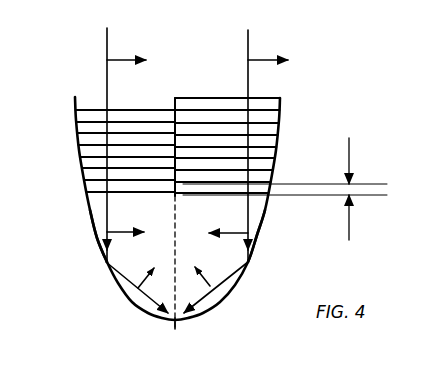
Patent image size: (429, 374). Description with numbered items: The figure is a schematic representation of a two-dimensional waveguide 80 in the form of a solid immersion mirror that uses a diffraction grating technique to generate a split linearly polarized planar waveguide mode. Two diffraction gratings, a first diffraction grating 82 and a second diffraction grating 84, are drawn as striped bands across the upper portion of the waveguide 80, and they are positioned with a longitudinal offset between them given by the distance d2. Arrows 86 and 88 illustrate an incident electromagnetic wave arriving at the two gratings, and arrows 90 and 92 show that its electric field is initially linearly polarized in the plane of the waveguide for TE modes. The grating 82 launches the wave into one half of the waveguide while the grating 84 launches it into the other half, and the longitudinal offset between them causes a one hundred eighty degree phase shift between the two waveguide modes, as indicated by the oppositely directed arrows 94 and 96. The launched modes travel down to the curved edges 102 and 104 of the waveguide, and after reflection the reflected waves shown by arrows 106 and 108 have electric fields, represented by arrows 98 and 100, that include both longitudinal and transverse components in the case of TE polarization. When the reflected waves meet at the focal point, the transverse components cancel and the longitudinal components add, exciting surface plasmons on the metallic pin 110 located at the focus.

The two-dimensional waveguide 80 is at (88, 100).
The first diffraction grating 82 is at (85, 152).
The second diffraction grating 84 is at (280, 135).
The incident electromagnetic wave arrow 86 is at (105, 43).
The incident electromagnetic wave arrow 88 is at (248, 40).
The incident electric field arrow 90 is at (118, 56).
The incident electric field arrow 92 is at (260, 57).
The transverse electric waveguide mode electric field arrow 94 is at (118, 230).
The transverse electric waveguide mode electric field arrow 96 is at (228, 230).
The transverse electric waveguide mode electric field arrow 98 is at (143, 282).
The transverse electric waveguide mode electric field arrow 100 is at (205, 280).
The edge of the waveguide 102 is at (93, 237).
The edge of the waveguide 104 is at (262, 238).
The reflected wave arrow 106 is at (138, 298).
The reflected wave arrow 108 is at (216, 301).
The metallic pin 110 is at (178, 326).
The grating offset distance d2 is at (351, 190).